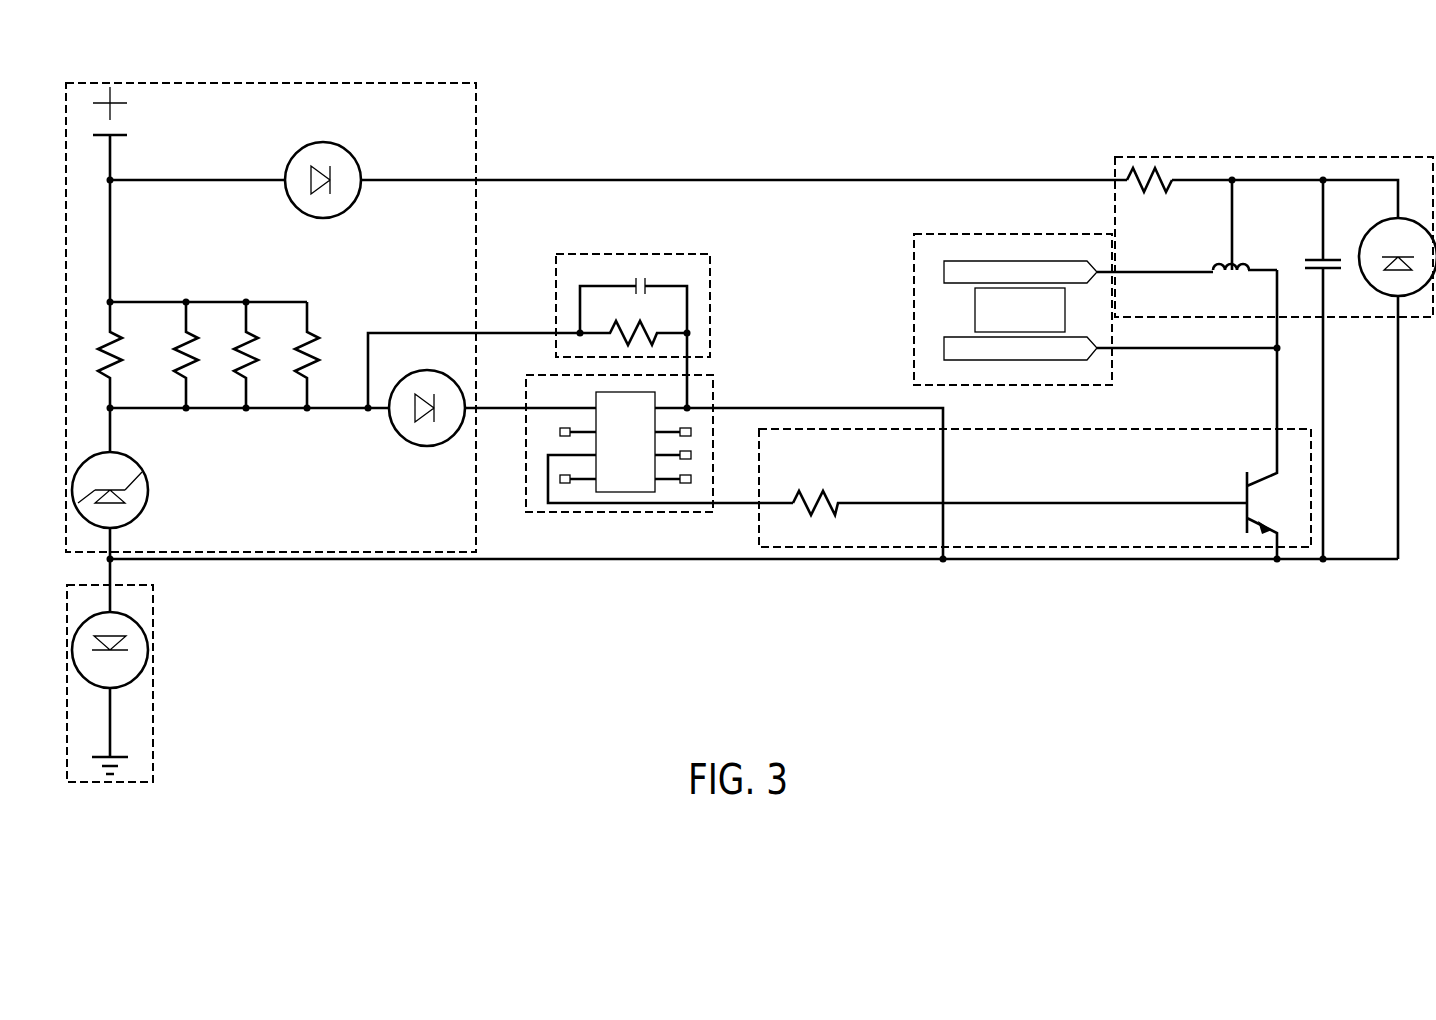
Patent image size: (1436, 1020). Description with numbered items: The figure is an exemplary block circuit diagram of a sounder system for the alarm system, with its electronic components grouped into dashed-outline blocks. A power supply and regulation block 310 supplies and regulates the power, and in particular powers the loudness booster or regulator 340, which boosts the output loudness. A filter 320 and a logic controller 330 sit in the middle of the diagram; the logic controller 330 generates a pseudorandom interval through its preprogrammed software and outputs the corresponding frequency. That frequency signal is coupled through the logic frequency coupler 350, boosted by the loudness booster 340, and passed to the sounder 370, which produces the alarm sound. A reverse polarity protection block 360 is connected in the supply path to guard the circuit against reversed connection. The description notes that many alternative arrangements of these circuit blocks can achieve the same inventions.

The power supply and regulation block 310 is at (478, 113).
The filter 320 is at (637, 252).
The logic controller 330 is at (622, 515).
The loudness booster 340 is at (1273, 155).
The logic frequency coupler 350 is at (983, 548).
The reverse polarity protection 360 is at (157, 723).
The sounder 370 is at (913, 311).